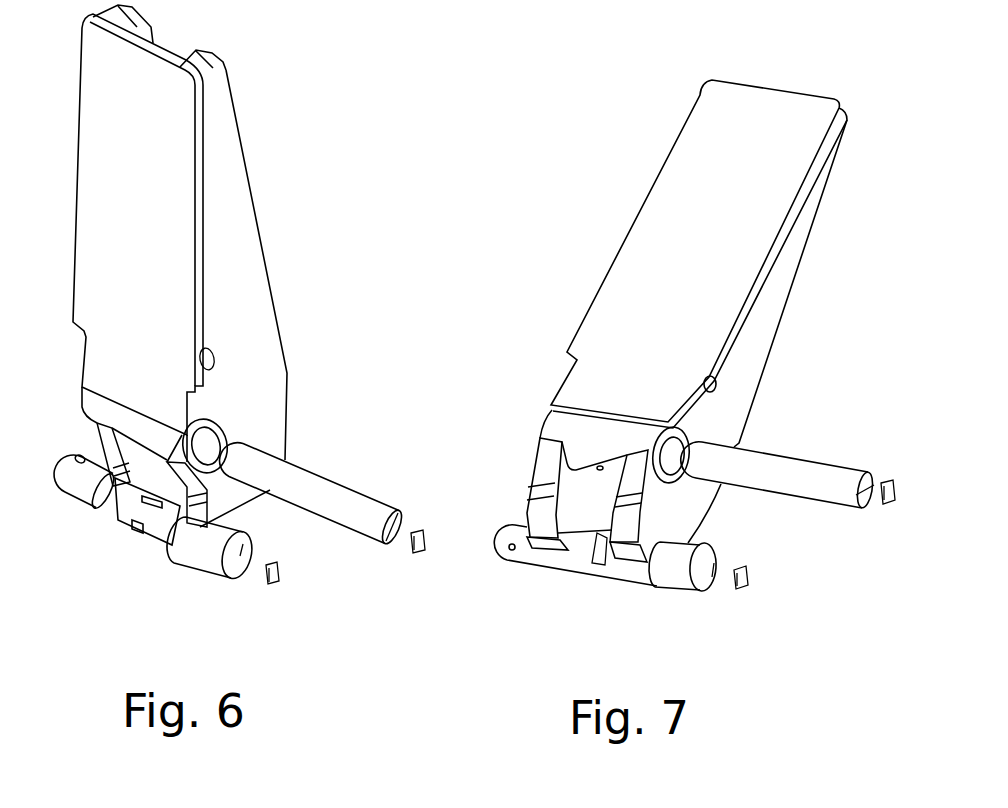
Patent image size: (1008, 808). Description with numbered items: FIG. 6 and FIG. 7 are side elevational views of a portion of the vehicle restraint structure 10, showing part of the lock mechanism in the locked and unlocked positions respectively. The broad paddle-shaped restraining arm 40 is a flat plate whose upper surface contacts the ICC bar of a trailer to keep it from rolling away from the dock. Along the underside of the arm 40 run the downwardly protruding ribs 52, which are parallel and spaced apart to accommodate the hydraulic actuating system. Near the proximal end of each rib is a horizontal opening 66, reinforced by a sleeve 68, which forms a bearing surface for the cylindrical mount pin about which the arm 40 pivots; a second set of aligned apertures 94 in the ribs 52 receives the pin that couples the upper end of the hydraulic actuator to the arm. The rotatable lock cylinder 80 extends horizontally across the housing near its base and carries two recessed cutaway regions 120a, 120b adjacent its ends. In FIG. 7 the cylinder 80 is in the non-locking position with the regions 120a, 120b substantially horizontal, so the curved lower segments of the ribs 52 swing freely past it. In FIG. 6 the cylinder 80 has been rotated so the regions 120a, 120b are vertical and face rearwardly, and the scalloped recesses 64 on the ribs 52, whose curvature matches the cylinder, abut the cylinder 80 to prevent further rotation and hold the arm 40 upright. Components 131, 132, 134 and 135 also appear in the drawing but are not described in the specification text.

In FIG. 6, the structure 10 is at (272, 122).
In FIG. 7, the structure 10 is at (636, 130).
In FIG. 6, the restraining arm 40 is at (140, 195).
In FIG. 7, the restraining arm 40 is at (683, 248).
In FIG. 6, the ribs 52 is at (262, 402).
In FIG. 7, the ribs 52 is at (733, 435).
In FIG. 6, the scalloped recesses 64 is at (215, 533).
In FIG. 7, the scalloped recesses 64 is at (537, 527).
In FIG. 6, the horizontal opening 66 is at (210, 450).
In FIG. 6, the sleeve 68 is at (216, 425).
In FIG. 6, the lock cylinder 80 is at (128, 514).
In FIG. 7, the lock cylinder 80 is at (552, 557).
In FIG. 6, the apertures 94 is at (214, 357).
In FIG. 6, the recessed cutaway region 120a is at (192, 533).
In FIG. 7, the recessed cutaway region 120a is at (642, 558).
In FIG. 6, the recessed cutaway region 120b is at (112, 490).
In FIG. 7, the recessed cutaway region 120b is at (558, 542).
In FIG. 6, the clip 131 is at (413, 553).
In FIG. 7, the clip 131 is at (888, 505).
In FIG. 6, the clip 132 is at (280, 572).
In FIG. 7, the clip 132 is at (748, 578).
In FIG. 6, the pin 134 is at (403, 517).
In FIG. 7, the pin 134 is at (868, 475).
In FIG. 6, the pin 135 is at (243, 548).
In FIG. 7, the pin 135 is at (720, 577).